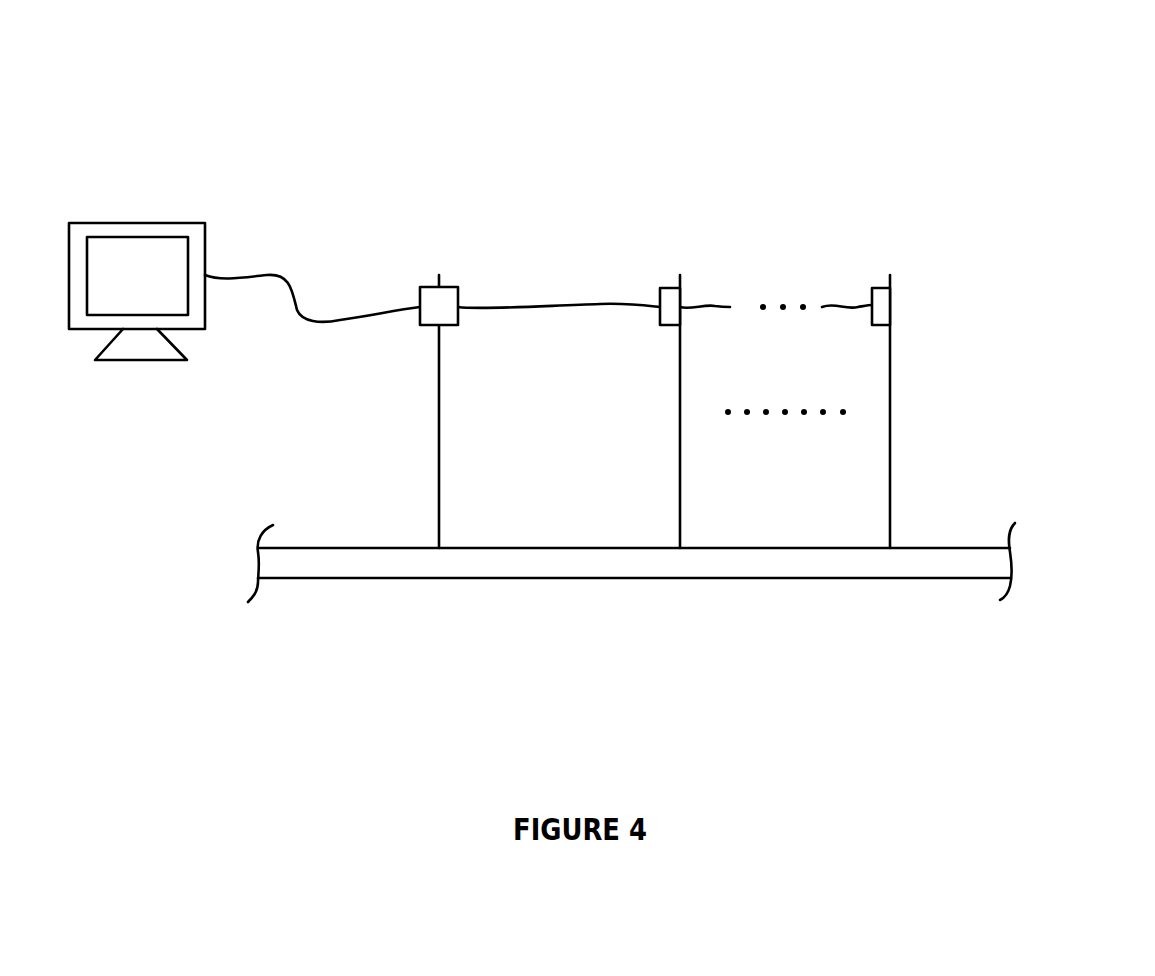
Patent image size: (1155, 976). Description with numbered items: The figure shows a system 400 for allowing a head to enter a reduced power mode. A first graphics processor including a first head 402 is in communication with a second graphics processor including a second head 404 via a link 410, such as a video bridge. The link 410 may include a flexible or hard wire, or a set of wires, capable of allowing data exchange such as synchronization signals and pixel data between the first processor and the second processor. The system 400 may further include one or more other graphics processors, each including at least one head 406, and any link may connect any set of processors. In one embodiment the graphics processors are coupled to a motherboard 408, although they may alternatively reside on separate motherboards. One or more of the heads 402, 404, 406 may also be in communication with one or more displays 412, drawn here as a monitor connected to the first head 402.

The system 400 is at (1087, 83).
The first head 402 is at (418, 288).
The second head 404 is at (658, 292).
The head 406 is at (870, 290).
The motherboard 408 is at (353, 548).
The link 410 is at (540, 305).
The display 412 is at (142, 223).